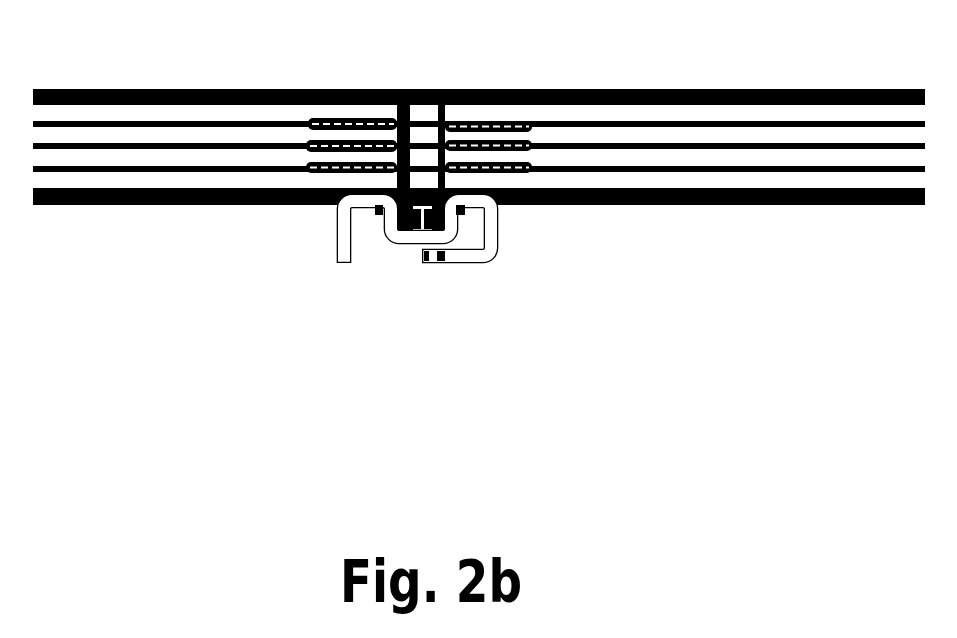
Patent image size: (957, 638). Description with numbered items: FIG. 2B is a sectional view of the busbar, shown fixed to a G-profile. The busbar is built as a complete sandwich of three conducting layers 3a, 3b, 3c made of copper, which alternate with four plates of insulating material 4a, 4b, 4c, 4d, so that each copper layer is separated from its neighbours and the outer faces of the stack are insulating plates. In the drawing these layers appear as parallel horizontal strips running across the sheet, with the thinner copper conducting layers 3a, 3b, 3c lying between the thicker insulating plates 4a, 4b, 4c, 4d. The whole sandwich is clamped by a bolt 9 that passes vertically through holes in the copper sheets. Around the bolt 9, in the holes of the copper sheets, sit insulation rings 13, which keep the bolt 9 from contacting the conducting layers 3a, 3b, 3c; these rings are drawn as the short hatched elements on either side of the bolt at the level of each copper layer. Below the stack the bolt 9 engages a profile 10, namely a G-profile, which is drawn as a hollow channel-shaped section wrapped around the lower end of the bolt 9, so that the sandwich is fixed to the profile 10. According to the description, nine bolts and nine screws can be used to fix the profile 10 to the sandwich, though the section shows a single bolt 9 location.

The conducting layer 3a is at (243, 125).
The conducting layer 3b is at (210, 147).
The conducting layer 3c is at (182, 168).
The plate of insulating material 4a is at (597, 182).
The plate of insulating material 4b is at (702, 155).
The plate of insulating material 4c is at (768, 132).
The plate of insulating material 4d is at (850, 115).
The bolt 9 is at (385, 224).
The profile 10 is at (490, 253).
The insulation ring 13 is at (531, 162).